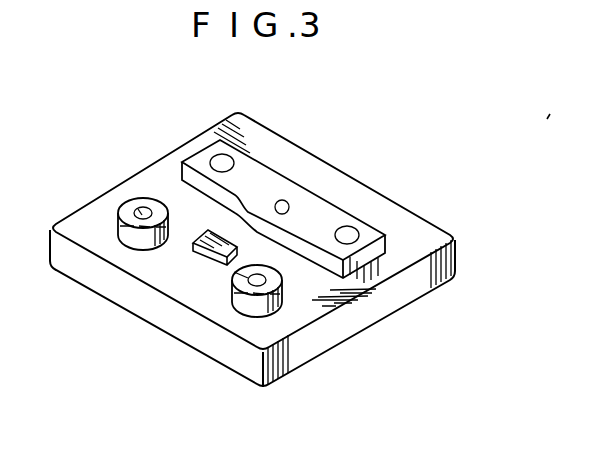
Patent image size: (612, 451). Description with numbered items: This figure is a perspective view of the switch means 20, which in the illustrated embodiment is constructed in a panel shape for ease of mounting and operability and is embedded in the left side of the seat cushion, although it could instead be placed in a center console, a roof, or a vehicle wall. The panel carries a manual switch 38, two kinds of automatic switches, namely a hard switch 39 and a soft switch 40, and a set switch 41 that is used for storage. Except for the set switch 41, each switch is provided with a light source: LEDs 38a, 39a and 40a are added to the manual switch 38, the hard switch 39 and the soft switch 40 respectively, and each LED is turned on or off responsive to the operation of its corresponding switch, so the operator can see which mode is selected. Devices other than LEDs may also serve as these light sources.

The switch means 20 is at (399, 324).
The manual switch 38 is at (219, 153).
The LED 38a is at (281, 200).
The hard switch 39 is at (269, 317).
The LED 39a is at (266, 279).
The soft switch 40 is at (118, 230).
The LED 40a is at (136, 209).
The set switch 41 is at (207, 243).